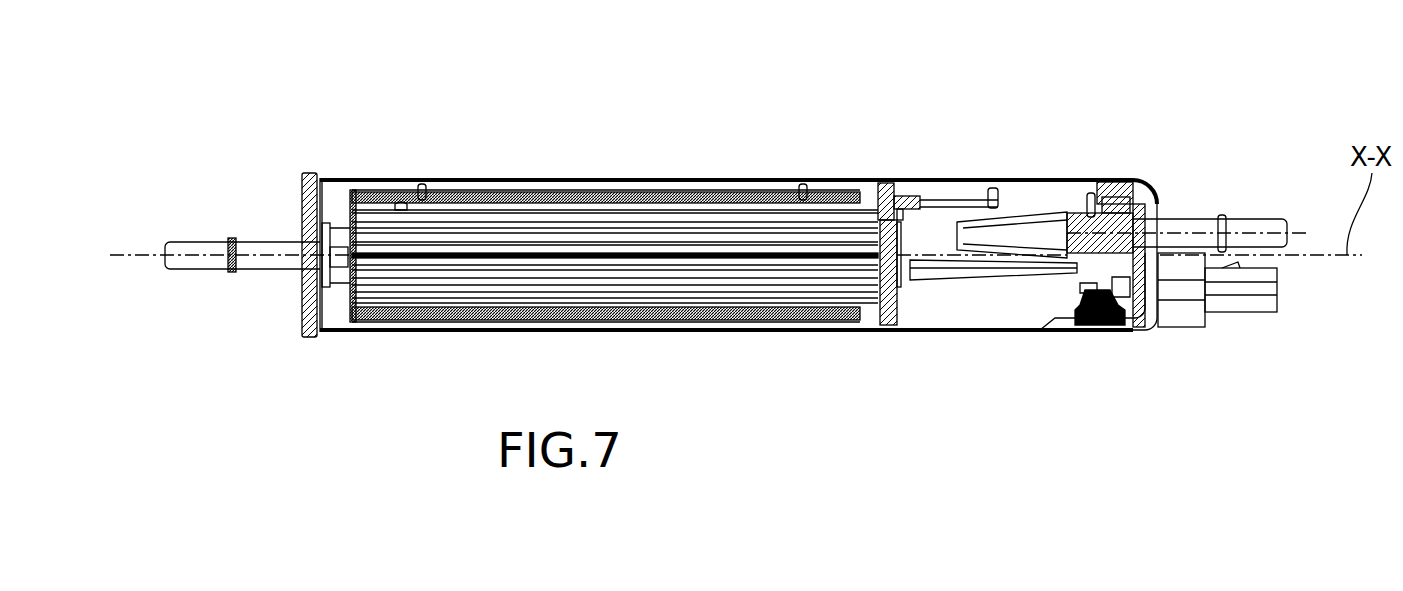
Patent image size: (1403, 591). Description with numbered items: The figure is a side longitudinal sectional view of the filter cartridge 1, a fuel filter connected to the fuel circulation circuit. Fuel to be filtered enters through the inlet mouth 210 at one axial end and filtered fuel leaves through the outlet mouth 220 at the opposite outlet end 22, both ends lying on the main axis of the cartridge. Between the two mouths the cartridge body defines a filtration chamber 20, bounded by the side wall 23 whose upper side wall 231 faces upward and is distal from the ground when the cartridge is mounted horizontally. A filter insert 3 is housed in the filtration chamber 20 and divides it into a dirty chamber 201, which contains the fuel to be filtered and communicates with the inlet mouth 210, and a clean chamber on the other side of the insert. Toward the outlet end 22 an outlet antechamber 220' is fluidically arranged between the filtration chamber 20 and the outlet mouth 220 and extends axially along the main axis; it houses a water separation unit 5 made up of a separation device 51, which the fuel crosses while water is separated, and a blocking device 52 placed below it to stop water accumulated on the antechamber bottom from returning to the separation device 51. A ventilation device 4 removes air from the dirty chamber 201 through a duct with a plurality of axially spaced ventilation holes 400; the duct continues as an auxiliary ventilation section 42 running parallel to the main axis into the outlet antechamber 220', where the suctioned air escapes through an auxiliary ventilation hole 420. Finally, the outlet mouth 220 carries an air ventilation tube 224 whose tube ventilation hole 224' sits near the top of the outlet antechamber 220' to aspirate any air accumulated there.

The filter cartridge 1 is at (240, 132).
The filtration chamber 20 is at (332, 183).
The dirty chamber 201 is at (335, 318).
The inlet mouth 210 is at (285, 262).
The ventilation holes 400 is at (422, 182).
The upper side wall 231 is at (623, 181).
The side wall 23 is at (695, 163).
The ventilation device 4 is at (728, 187).
The filter insert 3 is at (468, 291).
The outlet antechamber 220' is at (808, 313).
The auxiliary ventilation section 42 is at (930, 182).
The auxiliary ventilation hole 420 is at (995, 187).
The separation device 51 is at (983, 244).
The blocking device 52 is at (955, 287).
The water separation unit 5 is at (1015, 285).
The tube ventilation hole 224' is at (1070, 121).
The air ventilation tube 224 is at (1112, 140).
The outlet end 22 is at (1163, 197).
The outlet mouth 220 is at (1189, 329).